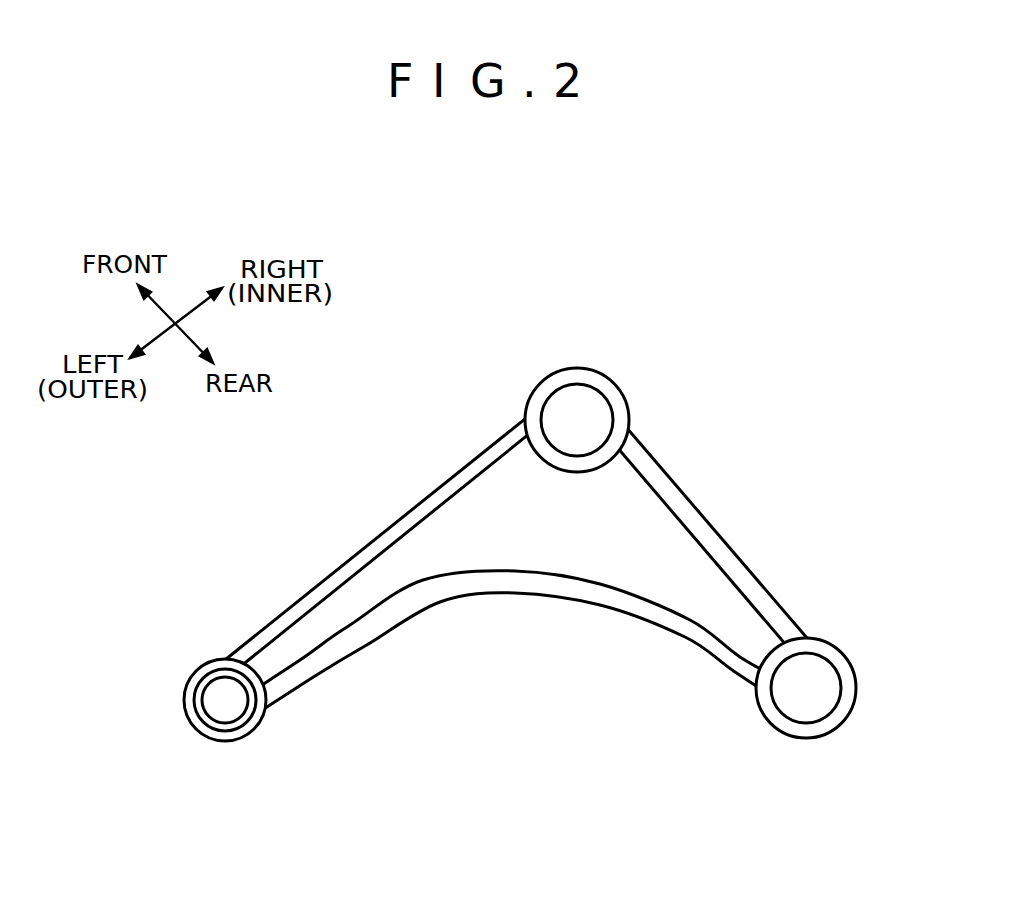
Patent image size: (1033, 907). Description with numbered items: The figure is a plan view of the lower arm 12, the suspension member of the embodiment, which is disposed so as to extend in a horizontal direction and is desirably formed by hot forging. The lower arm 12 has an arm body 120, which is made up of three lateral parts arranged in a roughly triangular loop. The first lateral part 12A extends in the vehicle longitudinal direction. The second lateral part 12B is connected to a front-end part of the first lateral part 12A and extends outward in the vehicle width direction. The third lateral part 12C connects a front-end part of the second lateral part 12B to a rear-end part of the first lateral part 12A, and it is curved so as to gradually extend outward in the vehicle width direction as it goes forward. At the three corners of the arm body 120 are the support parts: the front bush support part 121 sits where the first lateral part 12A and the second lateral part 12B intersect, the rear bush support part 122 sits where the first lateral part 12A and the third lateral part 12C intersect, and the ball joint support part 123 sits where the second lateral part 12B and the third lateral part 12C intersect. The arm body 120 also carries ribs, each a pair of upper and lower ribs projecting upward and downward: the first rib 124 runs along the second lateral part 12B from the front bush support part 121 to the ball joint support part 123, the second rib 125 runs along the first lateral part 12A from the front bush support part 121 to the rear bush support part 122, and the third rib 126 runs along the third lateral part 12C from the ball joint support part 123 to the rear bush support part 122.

The lower arm 12 is at (525, 536).
The first lateral part 12A is at (709, 530).
The second lateral part 12B is at (385, 534).
The third lateral part 12C is at (520, 656).
The arm body 120 is at (520, 640).
The front bush support part 121 is at (588, 412).
The rear bush support part 122 is at (818, 672).
The ball joint support part 123 is at (220, 690).
The first rib 124 is at (390, 530).
The second rib 125 is at (687, 515).
The third rib 126 is at (438, 585).